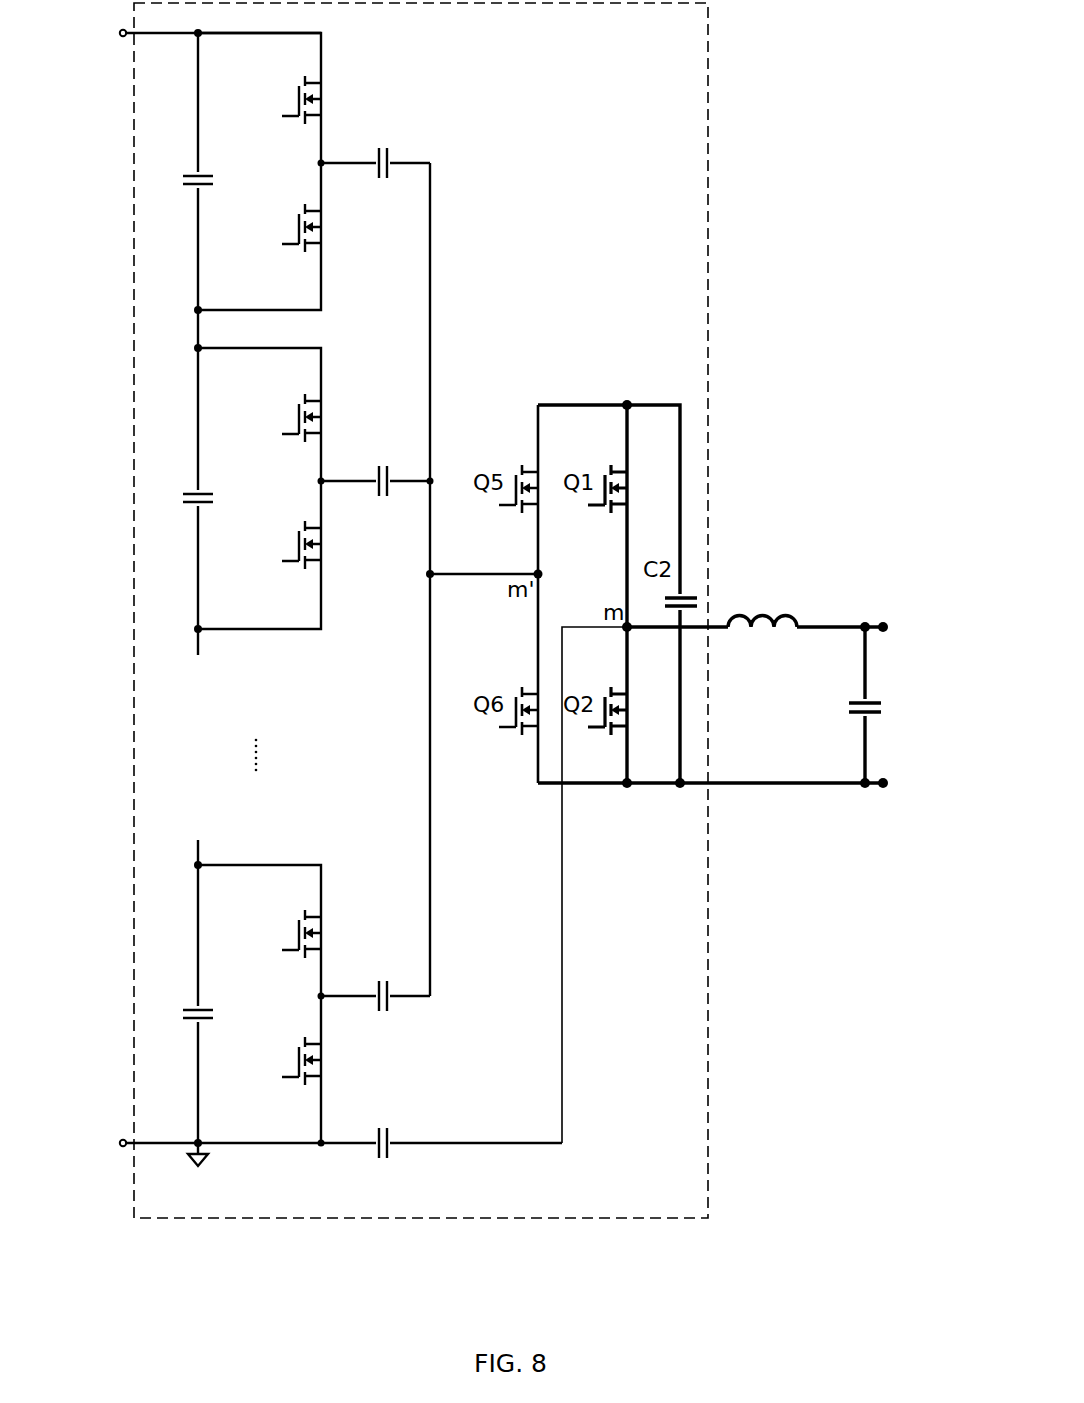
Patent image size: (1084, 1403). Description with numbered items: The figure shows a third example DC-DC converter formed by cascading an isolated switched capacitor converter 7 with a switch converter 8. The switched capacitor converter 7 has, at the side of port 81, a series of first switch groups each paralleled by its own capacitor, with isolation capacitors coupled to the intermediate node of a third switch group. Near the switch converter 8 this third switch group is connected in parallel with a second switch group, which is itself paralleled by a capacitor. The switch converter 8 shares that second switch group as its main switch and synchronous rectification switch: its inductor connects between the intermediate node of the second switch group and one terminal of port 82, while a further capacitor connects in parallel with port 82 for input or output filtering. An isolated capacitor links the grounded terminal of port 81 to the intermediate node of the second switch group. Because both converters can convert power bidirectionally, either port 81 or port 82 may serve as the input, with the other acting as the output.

The isolated switched capacitor converter 7 is at (713, 198).
The switch converter 8 is at (800, 575).
The port 81 is at (108, 663).
The port 82 is at (898, 747).